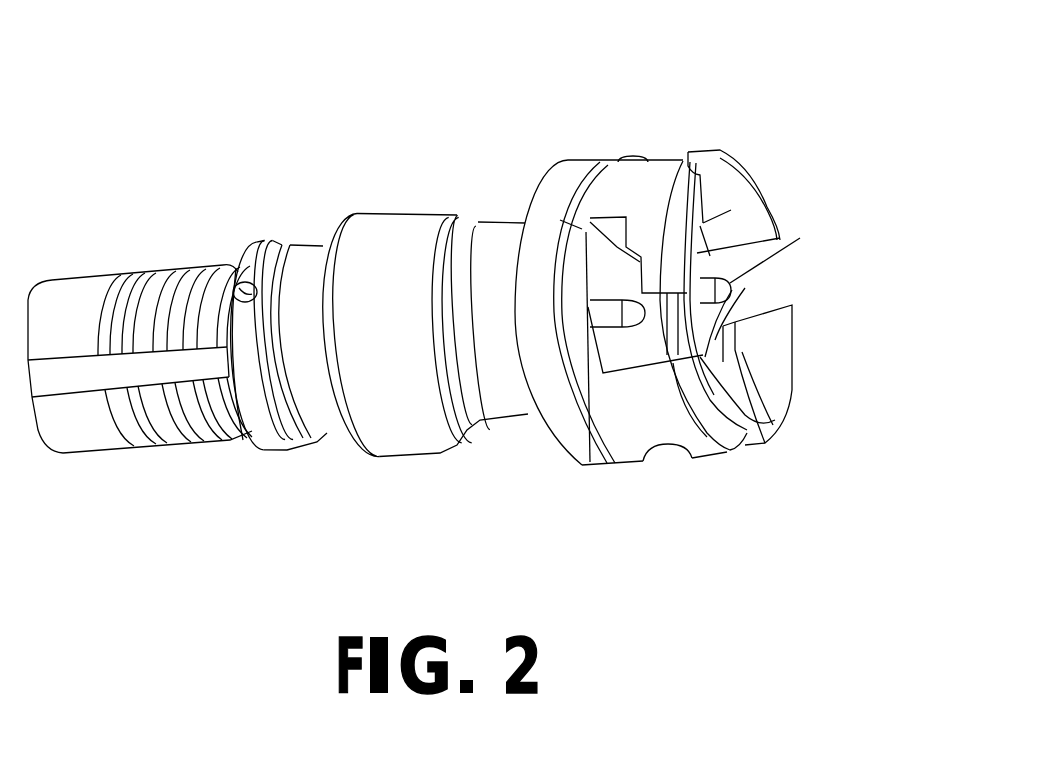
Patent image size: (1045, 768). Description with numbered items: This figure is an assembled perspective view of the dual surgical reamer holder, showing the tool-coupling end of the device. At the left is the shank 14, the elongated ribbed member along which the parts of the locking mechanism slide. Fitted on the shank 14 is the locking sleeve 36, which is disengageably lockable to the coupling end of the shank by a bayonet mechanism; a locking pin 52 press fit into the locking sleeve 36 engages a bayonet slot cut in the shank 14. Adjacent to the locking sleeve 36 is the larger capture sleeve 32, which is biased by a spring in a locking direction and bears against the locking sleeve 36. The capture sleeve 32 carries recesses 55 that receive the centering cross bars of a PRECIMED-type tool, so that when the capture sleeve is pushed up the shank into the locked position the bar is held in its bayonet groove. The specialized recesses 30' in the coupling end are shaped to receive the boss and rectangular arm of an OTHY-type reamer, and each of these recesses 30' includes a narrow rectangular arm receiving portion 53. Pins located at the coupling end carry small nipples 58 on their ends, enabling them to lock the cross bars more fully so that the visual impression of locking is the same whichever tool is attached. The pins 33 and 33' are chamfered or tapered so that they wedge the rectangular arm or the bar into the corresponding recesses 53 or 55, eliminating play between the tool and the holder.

The shank 14 is at (92, 273).
The locking pin 52 is at (234, 285).
The locking sleeve 36 is at (307, 242).
The capture sleeve 32 is at (377, 230).
The specialized recesses 30' is at (474, 190).
The rectangular arm receiving portion 53 is at (593, 218).
The pin 33' is at (761, 176).
The nipples 58 is at (800, 238).
The recesses 55 is at (588, 300).
The pin 33 is at (670, 435).